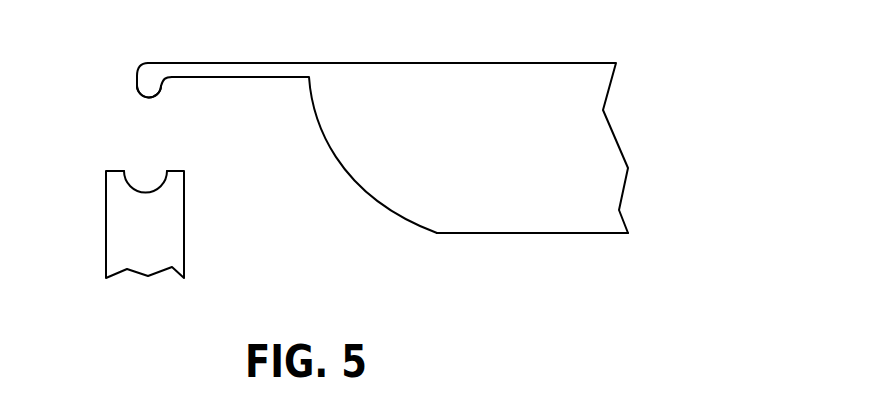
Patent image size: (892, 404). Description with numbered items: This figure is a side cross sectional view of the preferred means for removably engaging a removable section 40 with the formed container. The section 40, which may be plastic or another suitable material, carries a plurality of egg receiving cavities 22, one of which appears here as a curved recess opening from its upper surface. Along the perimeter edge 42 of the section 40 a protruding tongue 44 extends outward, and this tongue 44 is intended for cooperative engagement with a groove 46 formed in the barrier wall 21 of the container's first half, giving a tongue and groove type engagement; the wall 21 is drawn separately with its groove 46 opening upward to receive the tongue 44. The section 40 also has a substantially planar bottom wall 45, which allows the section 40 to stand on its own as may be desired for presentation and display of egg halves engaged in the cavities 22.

The removably engaged section 40 is at (372, 72).
The perimeter edge 42 is at (148, 68).
The protruding tongue 44 is at (143, 94).
The egg receiving cavity 22 is at (398, 193).
The bottom wall 45 is at (535, 233).
The barrier wall 21 is at (110, 243).
The groove 46 is at (132, 185).